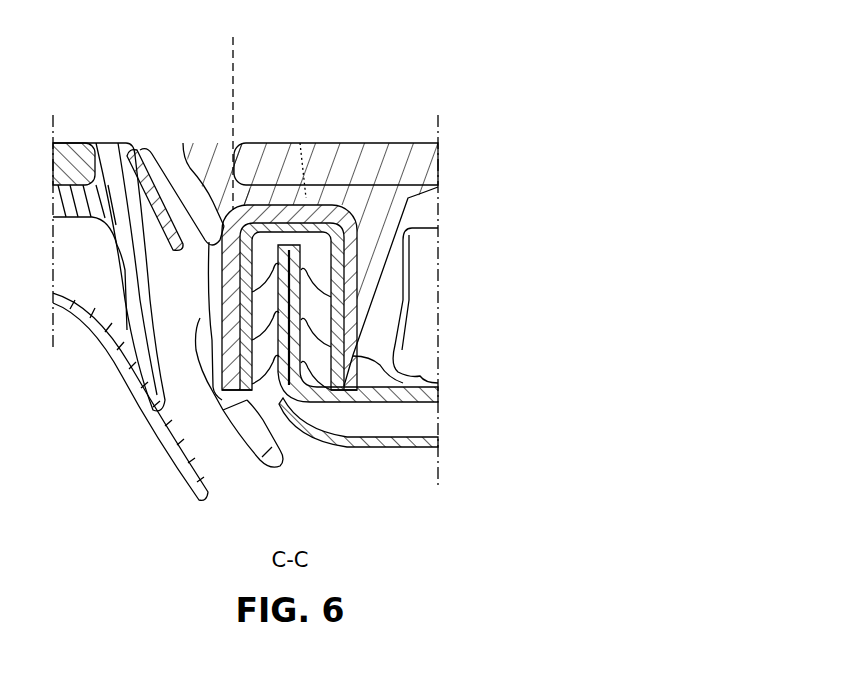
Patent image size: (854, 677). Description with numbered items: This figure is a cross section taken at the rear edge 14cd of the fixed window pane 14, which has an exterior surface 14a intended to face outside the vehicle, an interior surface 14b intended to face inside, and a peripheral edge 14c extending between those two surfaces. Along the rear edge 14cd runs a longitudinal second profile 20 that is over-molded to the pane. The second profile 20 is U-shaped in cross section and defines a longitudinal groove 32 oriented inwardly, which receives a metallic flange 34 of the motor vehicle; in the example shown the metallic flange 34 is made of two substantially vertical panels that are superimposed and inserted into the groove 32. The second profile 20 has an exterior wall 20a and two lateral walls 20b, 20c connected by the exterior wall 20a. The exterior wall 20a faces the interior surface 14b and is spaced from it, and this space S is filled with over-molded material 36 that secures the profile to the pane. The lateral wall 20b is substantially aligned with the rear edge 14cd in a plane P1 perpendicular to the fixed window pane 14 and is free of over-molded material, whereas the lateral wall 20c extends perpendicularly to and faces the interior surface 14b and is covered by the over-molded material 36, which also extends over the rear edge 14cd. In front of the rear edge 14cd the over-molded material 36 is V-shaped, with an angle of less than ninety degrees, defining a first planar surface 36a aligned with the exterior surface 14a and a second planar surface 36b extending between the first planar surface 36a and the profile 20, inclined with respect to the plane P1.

The fixed window pane 14 is at (358, 211).
The exterior surface 14a is at (297, 143).
The interior surface 14b is at (425, 205).
The peripheral edge 14c is at (205, 160).
The rear edge 14cd is at (216, 184).
The second profile 20 is at (368, 259).
The exterior wall 20a is at (292, 216).
The lateral wall 20b is at (212, 312).
The lateral wall 20c is at (357, 283).
The longitudinal groove 32 is at (317, 318).
The metallic flange 34 is at (358, 410).
The over-molded material 36 is at (190, 143).
The first planar surface 36a is at (208, 157).
The second planar surface 36b is at (180, 168).
The space S is at (300, 143).
The plane P1 is at (233, 52).